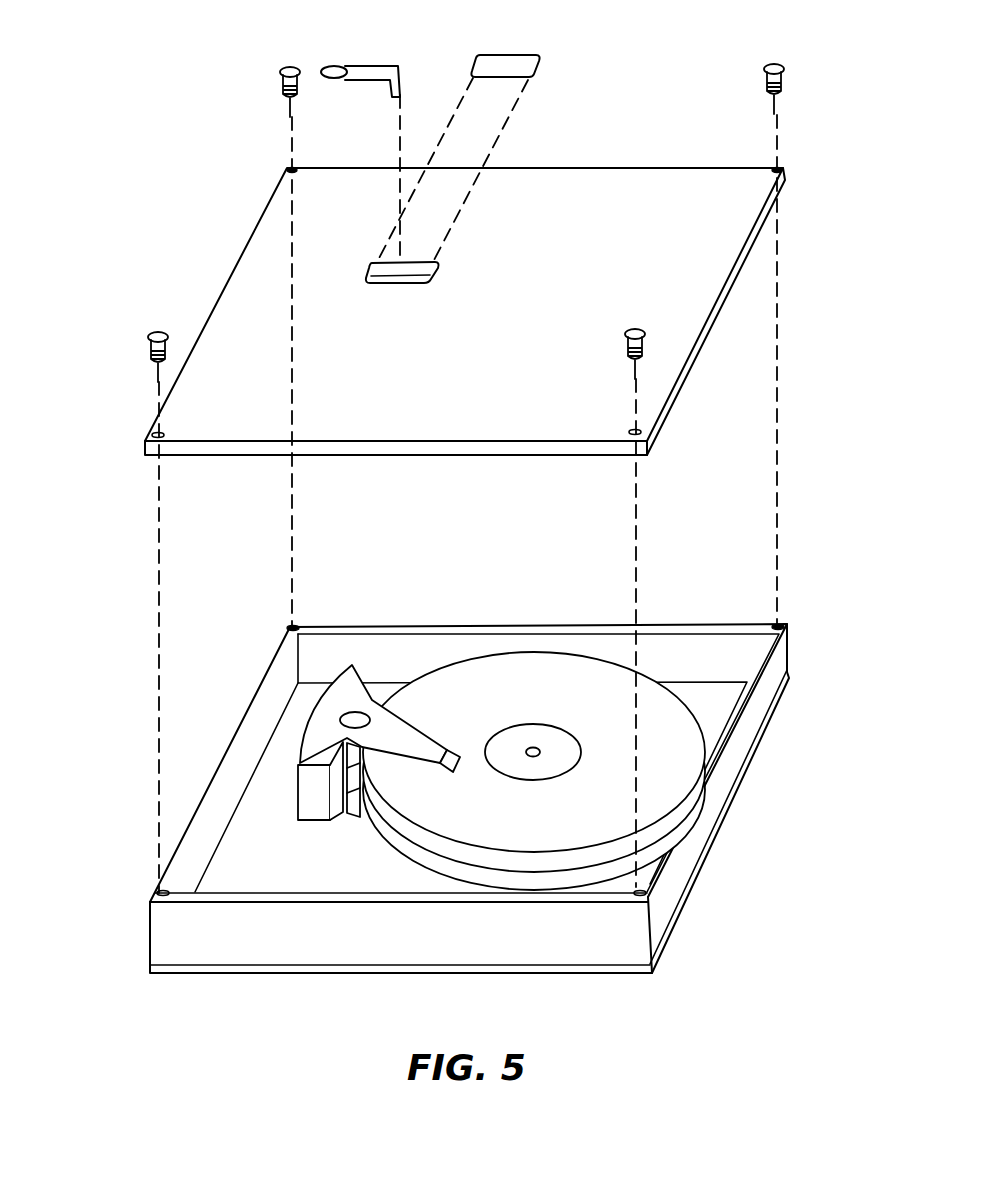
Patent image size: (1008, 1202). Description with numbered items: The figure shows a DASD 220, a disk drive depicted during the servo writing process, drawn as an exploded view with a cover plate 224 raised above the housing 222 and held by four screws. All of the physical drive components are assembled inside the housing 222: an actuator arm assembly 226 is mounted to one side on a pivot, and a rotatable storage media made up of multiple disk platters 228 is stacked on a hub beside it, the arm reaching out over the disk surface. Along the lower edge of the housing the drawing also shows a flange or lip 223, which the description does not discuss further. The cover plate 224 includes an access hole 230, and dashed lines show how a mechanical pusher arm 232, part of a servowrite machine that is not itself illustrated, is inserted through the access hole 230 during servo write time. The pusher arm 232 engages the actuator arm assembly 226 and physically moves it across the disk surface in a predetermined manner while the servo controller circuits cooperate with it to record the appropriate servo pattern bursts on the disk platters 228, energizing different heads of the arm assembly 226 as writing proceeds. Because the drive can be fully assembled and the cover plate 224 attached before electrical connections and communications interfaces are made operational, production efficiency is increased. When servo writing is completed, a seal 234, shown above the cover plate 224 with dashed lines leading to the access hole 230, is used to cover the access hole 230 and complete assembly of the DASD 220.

The DASD 220 is at (810, 211).
The housing 222 is at (165, 928).
The base flange 223 is at (233, 970).
The cover plate 224 is at (590, 166).
The actuator arm assembly 226 is at (343, 698).
The disk platters 228 is at (500, 675).
The access hole 230 is at (370, 272).
The mechanical pusher arm 232 is at (358, 64).
The seal 234 is at (502, 60).